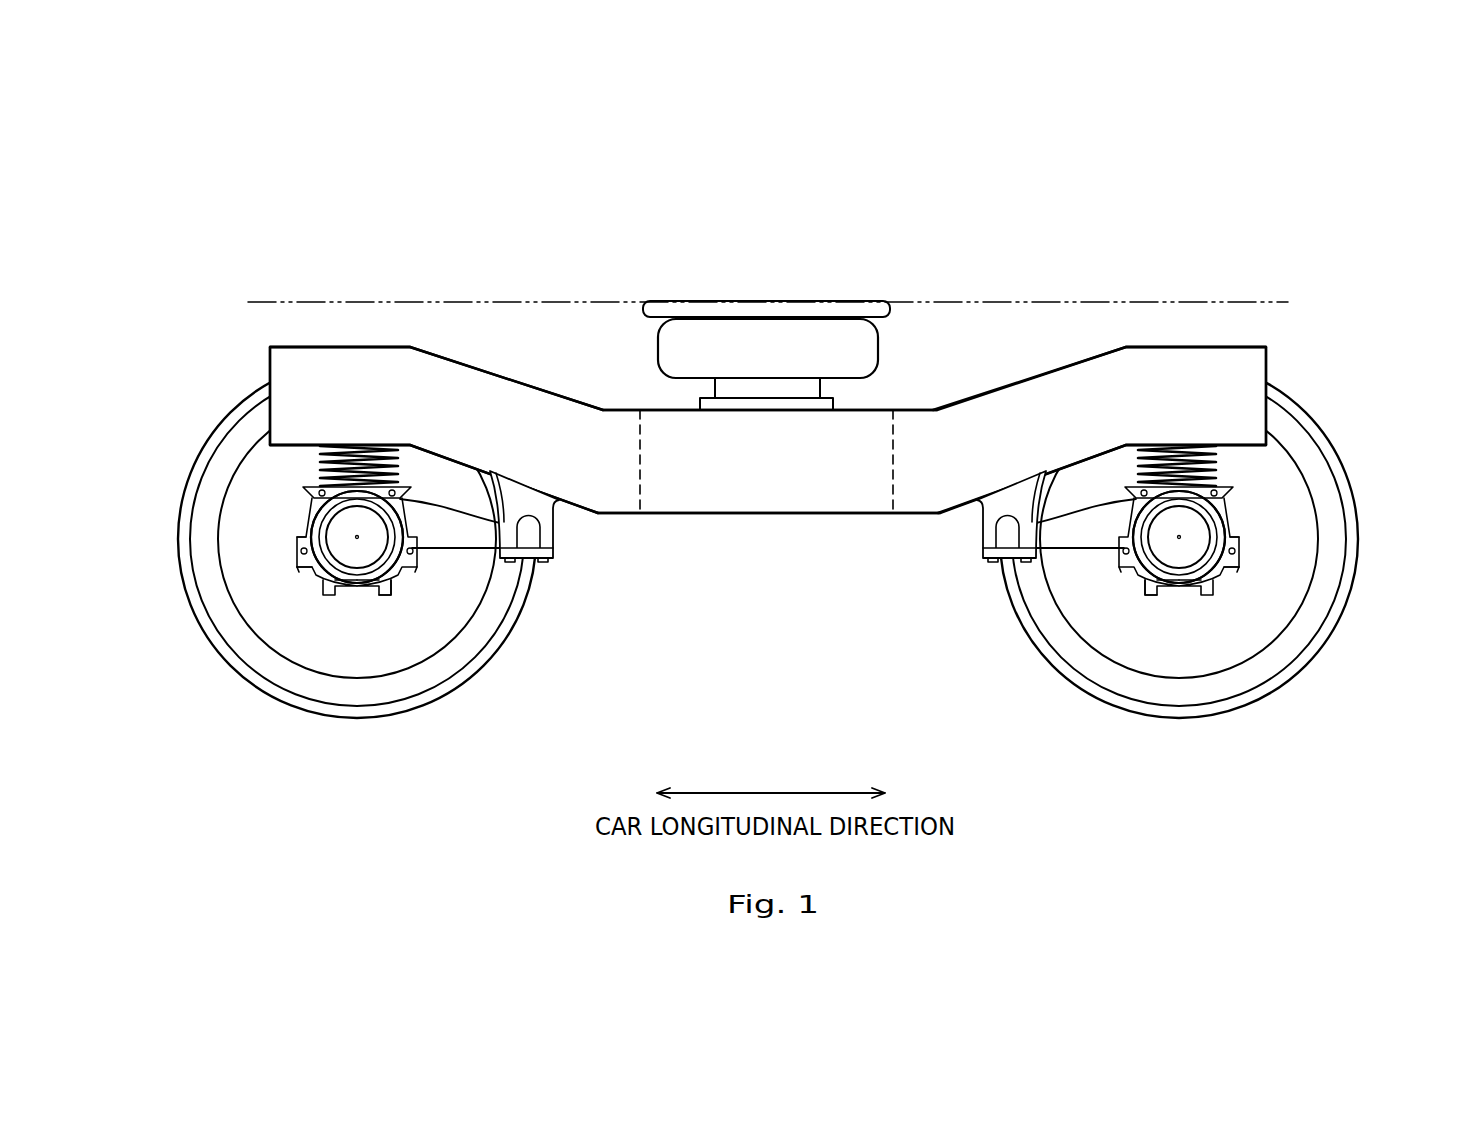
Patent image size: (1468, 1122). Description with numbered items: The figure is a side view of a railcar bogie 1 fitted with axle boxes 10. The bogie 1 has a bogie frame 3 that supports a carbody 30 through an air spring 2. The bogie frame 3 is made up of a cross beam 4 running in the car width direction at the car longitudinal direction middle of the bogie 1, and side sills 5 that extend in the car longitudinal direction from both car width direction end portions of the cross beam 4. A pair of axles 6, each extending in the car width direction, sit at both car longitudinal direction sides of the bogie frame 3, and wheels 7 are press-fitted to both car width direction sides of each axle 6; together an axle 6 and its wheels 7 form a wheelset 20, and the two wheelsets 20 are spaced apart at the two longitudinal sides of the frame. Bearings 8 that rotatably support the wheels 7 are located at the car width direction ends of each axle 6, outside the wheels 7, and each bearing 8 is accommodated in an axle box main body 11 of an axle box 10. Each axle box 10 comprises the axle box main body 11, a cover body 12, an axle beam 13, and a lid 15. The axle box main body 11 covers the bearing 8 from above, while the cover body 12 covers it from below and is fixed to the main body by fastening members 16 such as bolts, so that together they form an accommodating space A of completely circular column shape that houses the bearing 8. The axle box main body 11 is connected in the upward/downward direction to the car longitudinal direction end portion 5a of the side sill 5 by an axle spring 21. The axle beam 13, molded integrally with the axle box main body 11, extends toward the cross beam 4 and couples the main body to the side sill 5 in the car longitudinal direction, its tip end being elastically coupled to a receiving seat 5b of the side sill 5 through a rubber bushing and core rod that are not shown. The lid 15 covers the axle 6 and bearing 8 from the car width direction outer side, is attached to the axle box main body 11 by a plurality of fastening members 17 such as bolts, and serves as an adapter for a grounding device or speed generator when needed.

The railcar bogie 1 is at (768, 431).
The air spring 2 is at (662, 346).
The bogie frame 3 is at (768, 381).
The cross beam 4 is at (901, 414).
The side sill 5 is at (768, 403).
The car longitudinal direction end portion 5a is at (333, 347).
The receiving seat 5b is at (547, 517).
The axle 6 is at (302, 535).
The wheel 7 is at (180, 535).
The bearing 8 is at (768, 628).
The axle box 10 is at (289, 568).
The axle box main body 11 is at (322, 484).
The cover body 12 is at (372, 596).
The axle beam 13 is at (473, 543).
The lid 15 is at (357, 540).
The fastening member 16 is at (305, 569).
The fastening member 17 is at (418, 548).
The wheelset 20 is at (768, 539).
The axle spring 21 is at (313, 450).
The carbody 30 is at (428, 300).
The accommodating space A is at (352, 588).